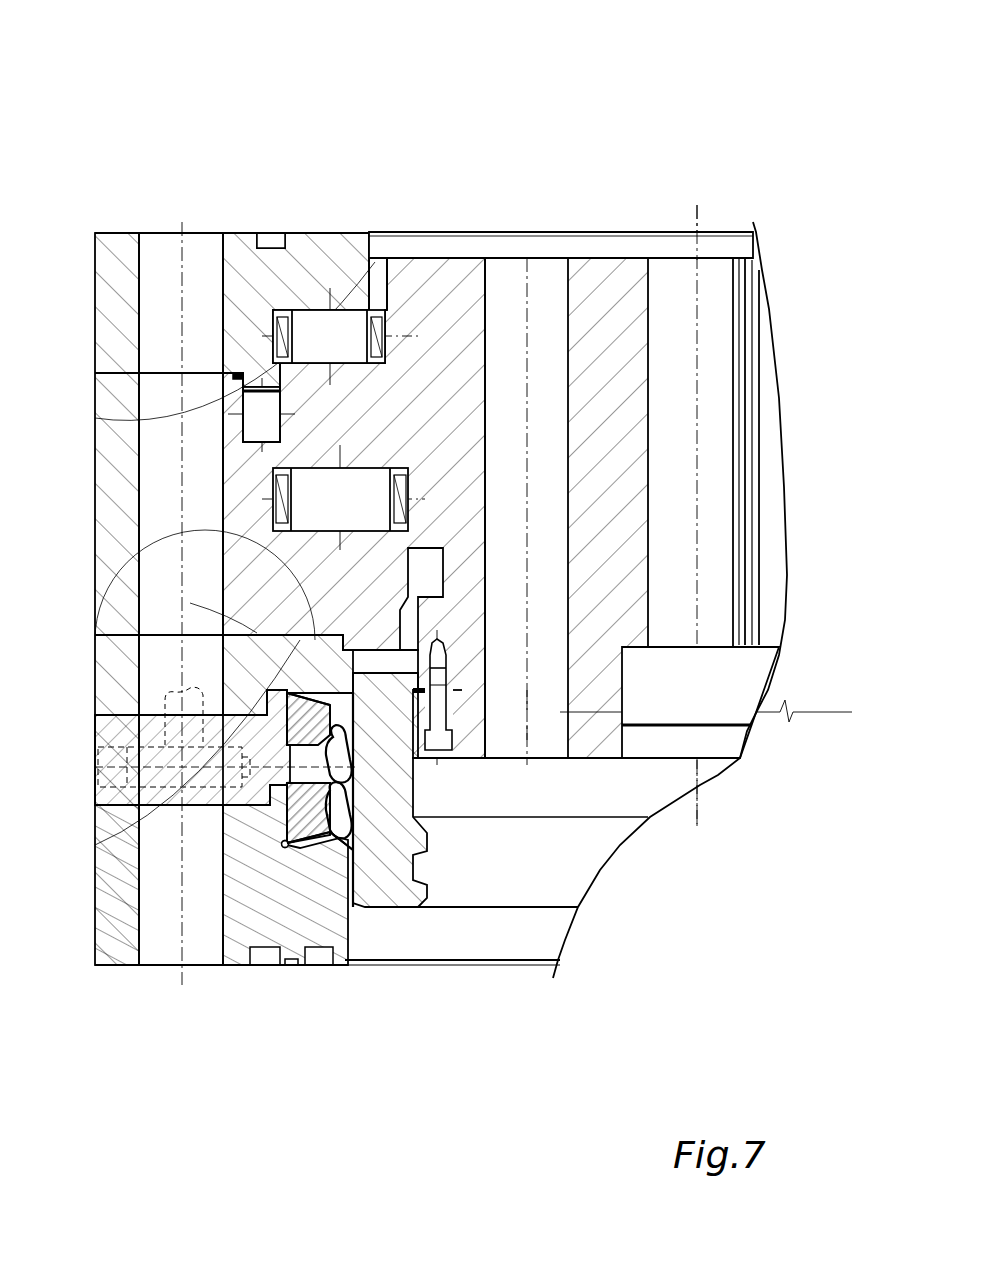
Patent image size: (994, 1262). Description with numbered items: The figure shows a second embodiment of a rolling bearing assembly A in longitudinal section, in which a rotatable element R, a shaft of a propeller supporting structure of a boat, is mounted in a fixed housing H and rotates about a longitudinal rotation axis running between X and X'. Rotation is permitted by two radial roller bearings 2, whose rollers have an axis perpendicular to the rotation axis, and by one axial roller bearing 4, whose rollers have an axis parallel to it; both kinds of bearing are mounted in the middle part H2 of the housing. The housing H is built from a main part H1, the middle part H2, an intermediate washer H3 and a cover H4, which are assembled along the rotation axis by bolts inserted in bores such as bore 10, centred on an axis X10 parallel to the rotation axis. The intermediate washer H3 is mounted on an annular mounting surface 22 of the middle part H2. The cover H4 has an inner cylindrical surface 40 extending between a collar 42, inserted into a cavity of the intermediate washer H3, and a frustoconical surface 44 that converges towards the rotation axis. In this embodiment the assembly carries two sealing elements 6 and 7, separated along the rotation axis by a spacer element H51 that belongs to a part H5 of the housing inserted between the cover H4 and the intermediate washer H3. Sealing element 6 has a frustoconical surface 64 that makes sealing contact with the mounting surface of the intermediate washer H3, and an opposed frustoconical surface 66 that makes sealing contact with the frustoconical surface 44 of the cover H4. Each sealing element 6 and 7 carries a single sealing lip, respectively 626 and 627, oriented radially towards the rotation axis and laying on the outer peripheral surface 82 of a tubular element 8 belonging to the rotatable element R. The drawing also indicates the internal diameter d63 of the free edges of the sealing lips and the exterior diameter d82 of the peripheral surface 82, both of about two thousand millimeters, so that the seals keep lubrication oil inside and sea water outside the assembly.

The rolling bearing assembly A is at (135, 112).
The bore 10 is at (158, 245).
The main part H1 is at (243, 236).
The housing H is at (330, 226).
The radial roller bearing 2 is at (368, 488).
The rotatable element R is at (500, 250).
The longitudinal rotation axis X' is at (708, 214).
The axial roller bearing 4 is at (240, 405).
The frustoconical surface 64 is at (298, 688).
The middle part H2 is at (112, 585).
The collar 42 is at (330, 626).
The intermediate washer H3 is at (115, 656).
The annular mounting surface 22 is at (125, 650).
The sealing element 7 is at (262, 712).
The part of housing H5 is at (110, 760).
The sealing element 6 is at (282, 790).
The frustoconical surface 44 is at (283, 835).
The cover H4 is at (105, 942).
The bore axis X10 is at (185, 613).
The frustoconical surface 66 is at (285, 850).
The outer peripheral surface 82 is at (345, 855).
The tubular element 8 is at (380, 882).
The sealing lip 627 is at (352, 740).
The sealing lip 626 is at (358, 810).
The inner cylindrical surface 40 is at (420, 780).
The spacer element H51 is at (452, 780).
The internal diameter of free edges d63 is at (511, 701).
The exterior diameter of surface 82 d82 is at (547, 726).
The longitudinal rotation axis X is at (704, 805).